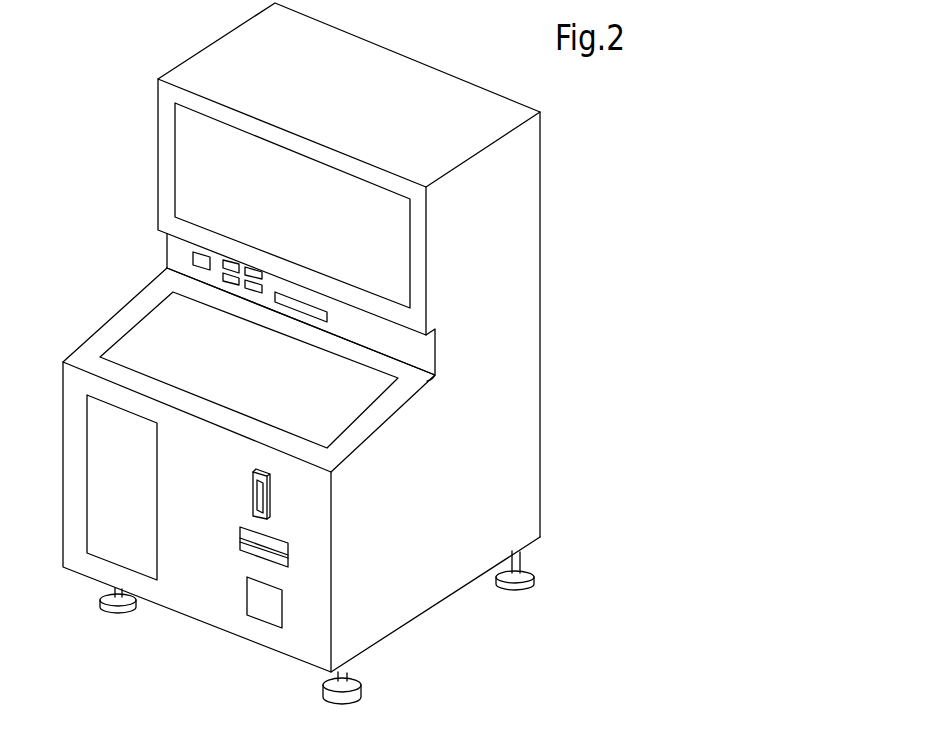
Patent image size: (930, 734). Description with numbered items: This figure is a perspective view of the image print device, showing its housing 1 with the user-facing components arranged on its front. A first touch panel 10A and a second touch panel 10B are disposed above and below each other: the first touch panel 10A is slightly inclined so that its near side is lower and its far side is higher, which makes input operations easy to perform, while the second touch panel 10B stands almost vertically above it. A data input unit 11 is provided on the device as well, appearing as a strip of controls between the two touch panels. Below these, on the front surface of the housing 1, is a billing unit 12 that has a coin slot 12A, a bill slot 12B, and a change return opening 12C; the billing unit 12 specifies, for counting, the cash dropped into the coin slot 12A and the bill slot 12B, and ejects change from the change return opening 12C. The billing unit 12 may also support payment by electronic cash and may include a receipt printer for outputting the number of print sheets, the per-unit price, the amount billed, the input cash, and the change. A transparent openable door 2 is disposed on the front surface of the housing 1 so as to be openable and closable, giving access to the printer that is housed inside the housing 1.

The housing 1 is at (512, 292).
The transparent openable door 2 is at (112, 480).
The first touch panel 10A is at (158, 332).
The second touch panel 10B is at (190, 152).
The data input unit 11 is at (186, 253).
The billing unit 12 is at (343, 548).
The coin slot 12A is at (268, 495).
The bill slot 12B is at (289, 550).
The change return opening 12C is at (323, 602).